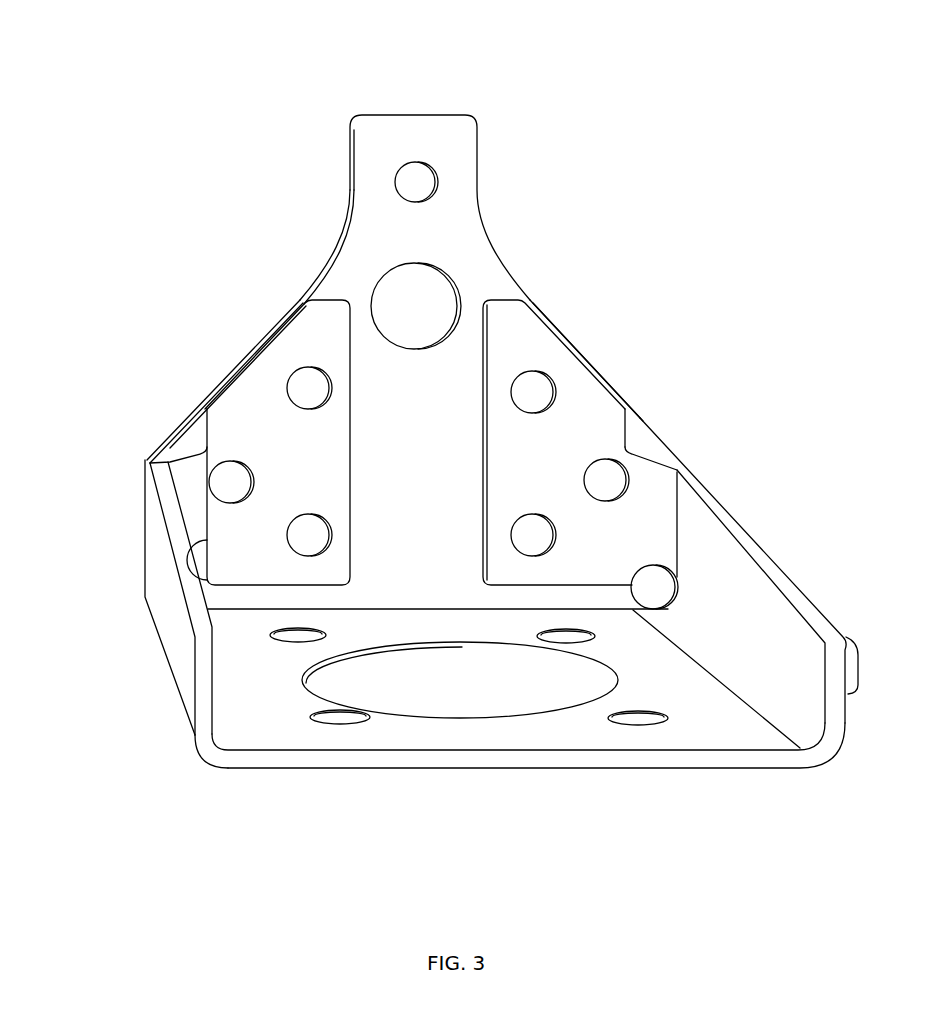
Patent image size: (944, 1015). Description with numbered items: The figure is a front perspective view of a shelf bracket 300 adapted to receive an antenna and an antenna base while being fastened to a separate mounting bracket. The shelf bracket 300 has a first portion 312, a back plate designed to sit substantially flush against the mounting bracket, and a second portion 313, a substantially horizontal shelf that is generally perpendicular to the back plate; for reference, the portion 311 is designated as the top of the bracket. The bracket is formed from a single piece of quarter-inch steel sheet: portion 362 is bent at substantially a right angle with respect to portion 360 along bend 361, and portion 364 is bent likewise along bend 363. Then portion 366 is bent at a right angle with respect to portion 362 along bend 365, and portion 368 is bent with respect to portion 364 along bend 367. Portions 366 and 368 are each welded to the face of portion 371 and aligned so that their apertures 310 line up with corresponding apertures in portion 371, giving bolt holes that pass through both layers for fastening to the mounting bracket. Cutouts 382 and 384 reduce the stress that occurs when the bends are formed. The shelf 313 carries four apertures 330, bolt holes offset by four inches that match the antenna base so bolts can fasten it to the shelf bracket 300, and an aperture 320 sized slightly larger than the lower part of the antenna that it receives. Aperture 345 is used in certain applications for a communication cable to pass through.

The shelf bracket 300 is at (198, 38).
The top portion 311 is at (395, 82).
The back plate portion 371 is at (345, 268).
The first portion 312 is at (195, 308).
The bend 365 is at (152, 448).
The bend 367 is at (680, 442).
The portion 366 is at (303, 312).
The portion 368 is at (545, 312).
The cutout 382 is at (210, 563).
The cutout 384 is at (660, 587).
The apertures 310 is at (398, 172).
The aperture 345 is at (445, 272).
The portion 362 is at (192, 677).
The bend 363 is at (832, 770).
The portion 364 is at (855, 680).
The portion 360 is at (398, 768).
The bend 361 is at (207, 768).
The second portion 313 is at (265, 788).
The aperture 320 is at (486, 718).
The apertures 330 is at (272, 640).